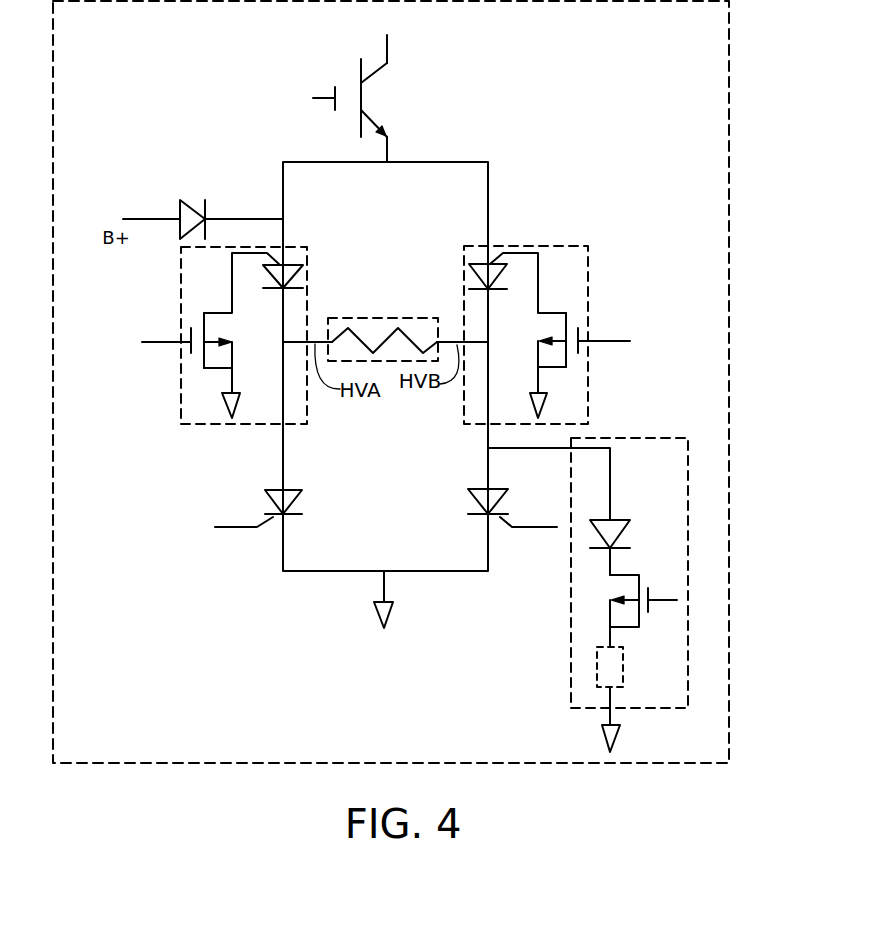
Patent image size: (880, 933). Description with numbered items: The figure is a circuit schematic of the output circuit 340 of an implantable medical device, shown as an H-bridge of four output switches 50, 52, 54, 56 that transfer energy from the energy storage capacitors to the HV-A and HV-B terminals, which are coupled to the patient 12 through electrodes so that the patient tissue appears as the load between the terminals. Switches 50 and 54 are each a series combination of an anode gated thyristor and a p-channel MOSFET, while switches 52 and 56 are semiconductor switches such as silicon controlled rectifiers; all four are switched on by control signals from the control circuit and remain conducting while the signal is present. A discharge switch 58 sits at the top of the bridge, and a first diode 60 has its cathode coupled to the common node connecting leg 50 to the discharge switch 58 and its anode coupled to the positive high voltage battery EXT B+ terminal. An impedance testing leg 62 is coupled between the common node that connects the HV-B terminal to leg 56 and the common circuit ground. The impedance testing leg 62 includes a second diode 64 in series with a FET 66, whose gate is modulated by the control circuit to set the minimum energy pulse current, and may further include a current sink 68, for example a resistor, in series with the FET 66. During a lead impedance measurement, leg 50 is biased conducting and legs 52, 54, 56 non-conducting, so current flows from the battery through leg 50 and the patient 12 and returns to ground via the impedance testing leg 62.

The output circuit 340 is at (730, 447).
The patient 12 is at (378, 318).
The output switch 50 is at (181, 313).
The output switch 52 is at (272, 502).
The output switch 54 is at (588, 306).
The output switch 56 is at (498, 502).
The discharge switch 58 is at (383, 66).
The first diode 60 is at (197, 203).
The impedance testing leg 62 is at (571, 651).
The second diode 64 is at (620, 537).
The FET 66 is at (623, 628).
The current sink 68 is at (623, 668).